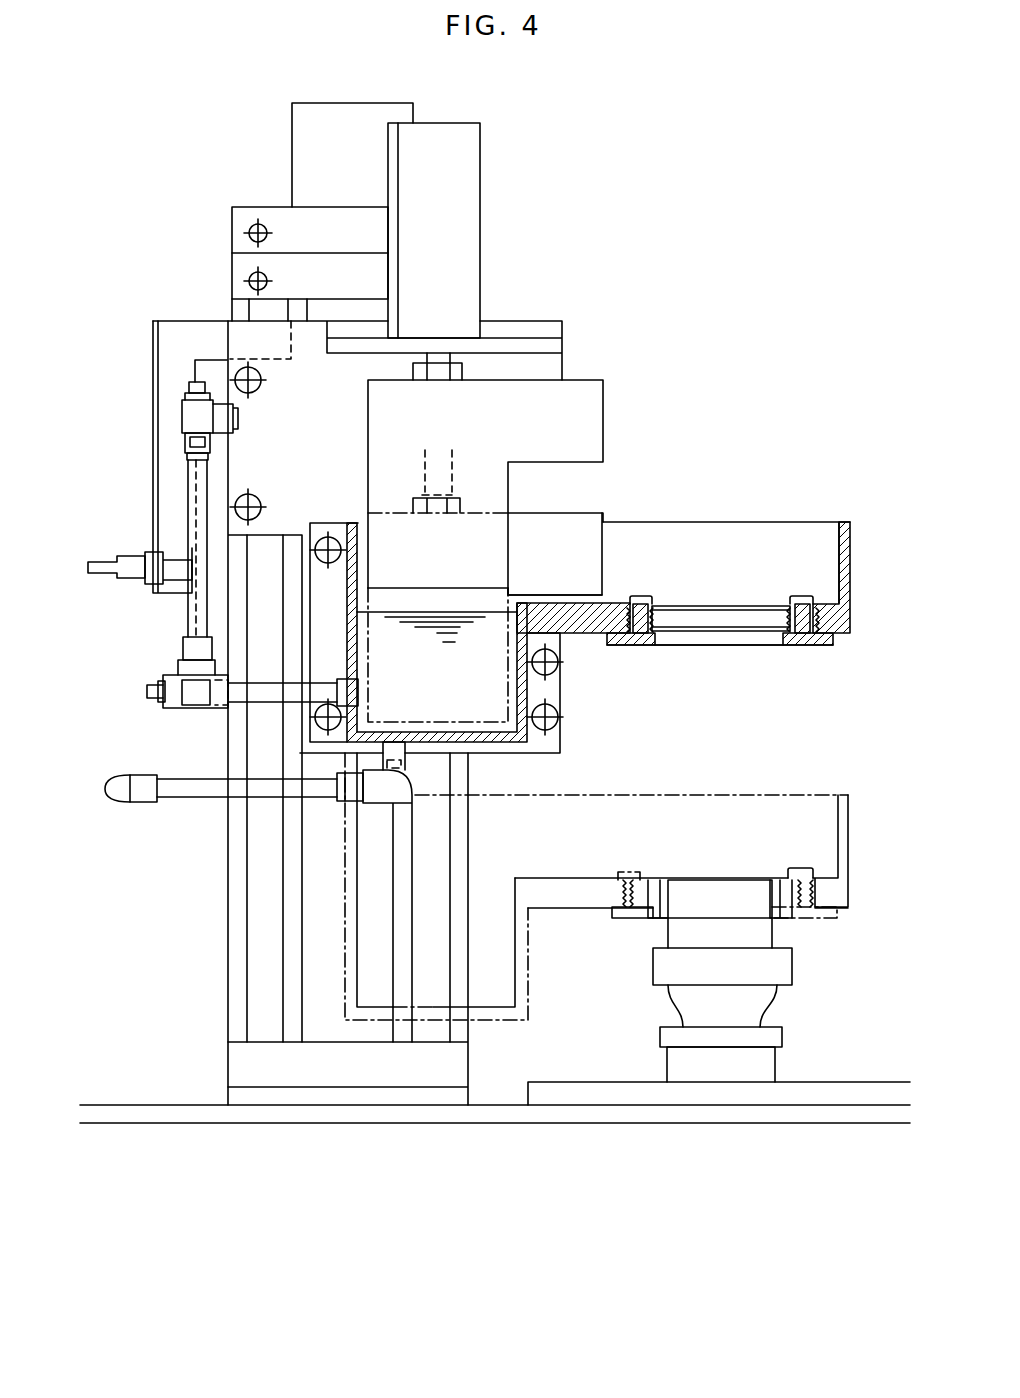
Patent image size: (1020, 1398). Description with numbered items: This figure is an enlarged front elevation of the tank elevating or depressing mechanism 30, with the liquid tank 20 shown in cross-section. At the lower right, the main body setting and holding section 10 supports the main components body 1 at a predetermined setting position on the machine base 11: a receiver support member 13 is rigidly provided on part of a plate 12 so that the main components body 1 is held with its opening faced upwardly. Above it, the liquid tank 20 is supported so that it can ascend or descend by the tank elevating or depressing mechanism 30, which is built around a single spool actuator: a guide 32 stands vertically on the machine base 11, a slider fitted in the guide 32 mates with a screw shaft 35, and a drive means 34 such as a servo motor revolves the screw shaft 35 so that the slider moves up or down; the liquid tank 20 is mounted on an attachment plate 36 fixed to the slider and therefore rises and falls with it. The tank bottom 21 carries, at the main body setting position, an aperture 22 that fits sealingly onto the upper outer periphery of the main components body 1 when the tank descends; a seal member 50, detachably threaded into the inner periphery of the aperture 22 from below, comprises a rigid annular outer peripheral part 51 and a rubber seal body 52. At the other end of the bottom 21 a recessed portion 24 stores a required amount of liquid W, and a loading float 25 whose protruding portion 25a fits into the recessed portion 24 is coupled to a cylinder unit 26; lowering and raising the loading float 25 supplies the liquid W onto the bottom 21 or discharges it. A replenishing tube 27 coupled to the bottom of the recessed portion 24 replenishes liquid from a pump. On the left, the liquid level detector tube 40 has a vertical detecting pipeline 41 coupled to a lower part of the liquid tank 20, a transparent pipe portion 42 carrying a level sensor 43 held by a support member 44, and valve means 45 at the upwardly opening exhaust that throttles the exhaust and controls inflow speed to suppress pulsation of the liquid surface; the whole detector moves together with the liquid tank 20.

The main components body 1 is at (758, 935).
The main body setting and holding section 10 is at (759, 1082).
The machine base 11 is at (122, 1122).
The plate 12 is at (598, 1095).
The receiver support member 13 is at (765, 1058).
The liquid tank 20 is at (842, 520).
The bottom 21 is at (820, 633).
The aperture 22 is at (795, 600).
The recessed portion 24 is at (520, 747).
The loading float 25 is at (583, 392).
The protruding portion 25a is at (595, 548).
The cylinder unit 26 is at (465, 195).
The replenishing tube 27 is at (200, 790).
The tank elevating or depressing mechanism 30 is at (198, 268).
The guide 32 is at (262, 822).
The drive means 34 is at (307, 143).
The screw shaft 35 is at (325, 870).
The attachment plate 36 is at (270, 415).
The liquid level detector tube 40 is at (126, 526).
The detecting pipeline 41 is at (183, 610).
The transparent pipe portion 42 is at (195, 500).
The level sensor 43 is at (132, 578).
The support member 44 is at (168, 375).
The valve means 45 is at (205, 417).
The seal member 50 is at (779, 592).
The outer peripheral part 51 is at (641, 634).
The seal body 52 is at (789, 646).
The liquid W is at (468, 655).